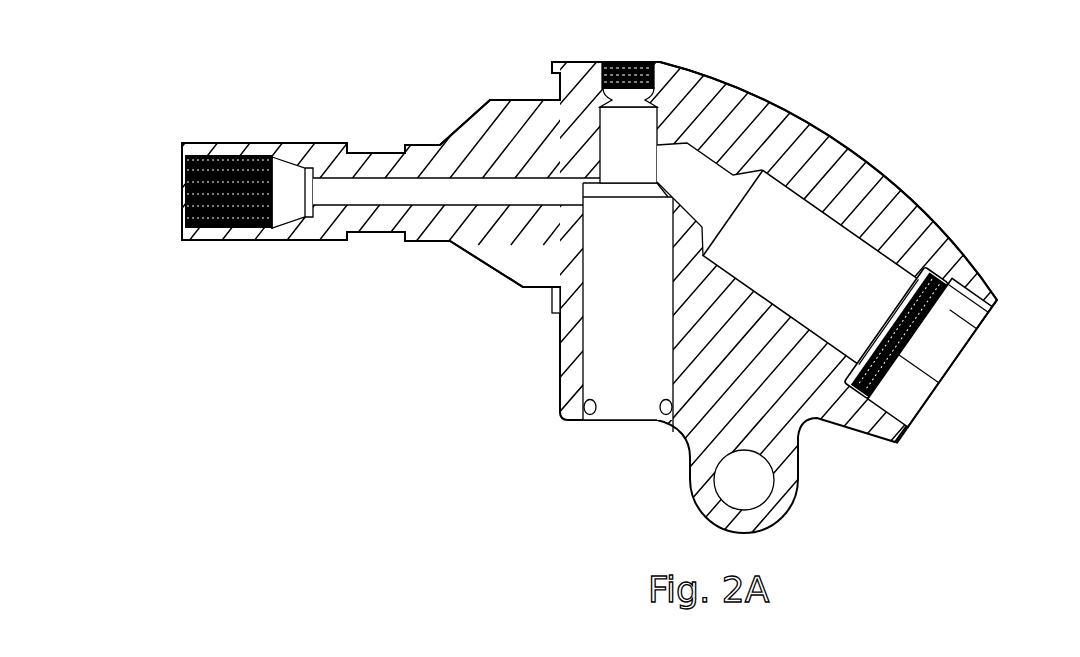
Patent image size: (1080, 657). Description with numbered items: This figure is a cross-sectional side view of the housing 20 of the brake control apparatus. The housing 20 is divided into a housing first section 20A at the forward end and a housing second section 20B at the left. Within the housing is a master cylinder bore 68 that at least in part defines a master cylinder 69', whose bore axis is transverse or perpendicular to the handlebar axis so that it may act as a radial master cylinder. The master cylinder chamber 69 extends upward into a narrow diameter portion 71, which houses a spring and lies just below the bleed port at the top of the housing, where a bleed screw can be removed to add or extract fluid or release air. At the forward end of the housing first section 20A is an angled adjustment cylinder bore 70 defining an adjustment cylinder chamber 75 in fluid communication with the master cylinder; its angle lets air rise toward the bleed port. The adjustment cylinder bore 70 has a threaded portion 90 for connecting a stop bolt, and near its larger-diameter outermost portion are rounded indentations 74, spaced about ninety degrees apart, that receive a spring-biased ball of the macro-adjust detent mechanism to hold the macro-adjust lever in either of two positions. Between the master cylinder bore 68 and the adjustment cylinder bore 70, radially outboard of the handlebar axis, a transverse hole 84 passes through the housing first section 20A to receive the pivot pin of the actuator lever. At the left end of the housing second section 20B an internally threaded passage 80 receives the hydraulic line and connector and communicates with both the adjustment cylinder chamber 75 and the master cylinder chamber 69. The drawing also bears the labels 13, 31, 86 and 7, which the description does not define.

The set screw 13 is at (628, 52).
The housing 20 is at (752, 101).
The housing first section 20A is at (845, 125).
The housing second section 20B is at (504, 98).
The fluid passage 31 is at (428, 192).
The master cylinder bore 68 is at (617, 315).
The master cylinder chamber 69 is at (620, 344).
The master cylinder 69' is at (519, 445).
The adjustment cylinder bore 70 is at (805, 270).
The narrow diameter portion 71 is at (635, 128).
The indentations 74 is at (996, 307).
The adjustment cylinder chamber 75 is at (870, 299).
The partial numeral (cut off) 7 is at (1026, 367).
The passage 80 is at (174, 209).
The hole 84 is at (762, 492).
The shoulder 86 is at (492, 263).
The threaded portion 90 is at (947, 272).